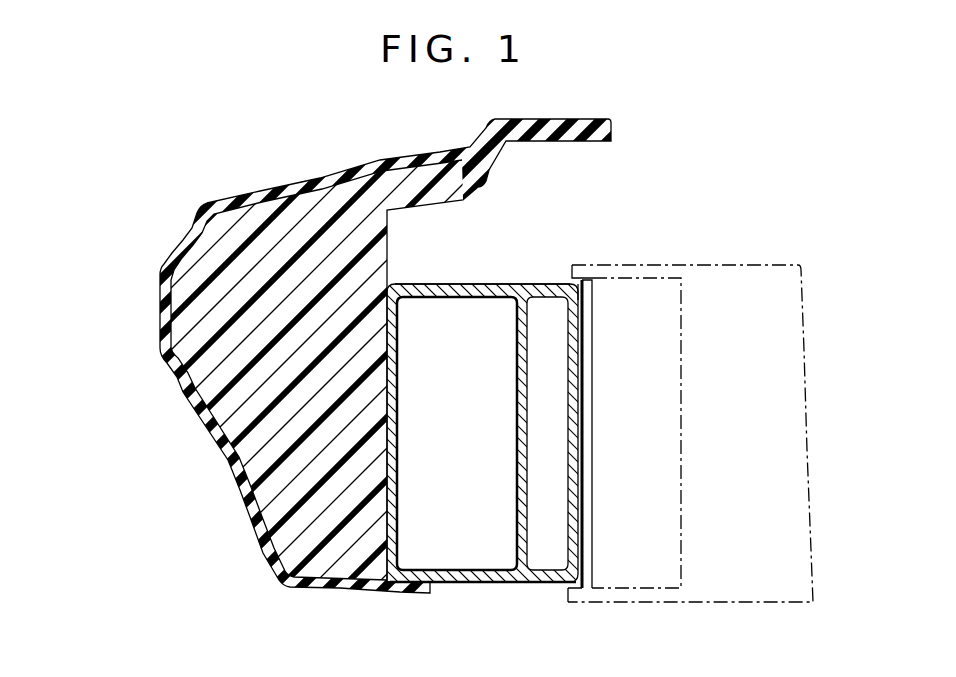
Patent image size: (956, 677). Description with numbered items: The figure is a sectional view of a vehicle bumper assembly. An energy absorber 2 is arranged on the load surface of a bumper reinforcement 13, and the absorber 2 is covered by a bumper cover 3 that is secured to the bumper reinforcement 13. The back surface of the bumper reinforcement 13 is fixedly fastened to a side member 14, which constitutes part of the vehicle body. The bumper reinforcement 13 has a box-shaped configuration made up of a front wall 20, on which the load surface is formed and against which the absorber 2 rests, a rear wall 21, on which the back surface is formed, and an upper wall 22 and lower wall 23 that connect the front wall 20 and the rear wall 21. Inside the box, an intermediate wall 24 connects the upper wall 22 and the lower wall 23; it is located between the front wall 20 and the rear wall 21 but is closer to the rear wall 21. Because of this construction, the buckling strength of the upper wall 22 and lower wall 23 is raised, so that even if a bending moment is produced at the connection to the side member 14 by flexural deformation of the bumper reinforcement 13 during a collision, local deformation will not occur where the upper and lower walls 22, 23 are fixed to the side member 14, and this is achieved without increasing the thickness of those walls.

The energy absorber 2 is at (275, 243).
The bumper cover 3 is at (158, 287).
The bumper reinforcement 13 is at (545, 245).
The side member 14 is at (720, 263).
The front wall 20 is at (478, 338).
The rear wall 21 is at (580, 405).
The upper wall 22 is at (458, 286).
The lower wall 23 is at (475, 583).
The intermediate wall 24 is at (533, 468).